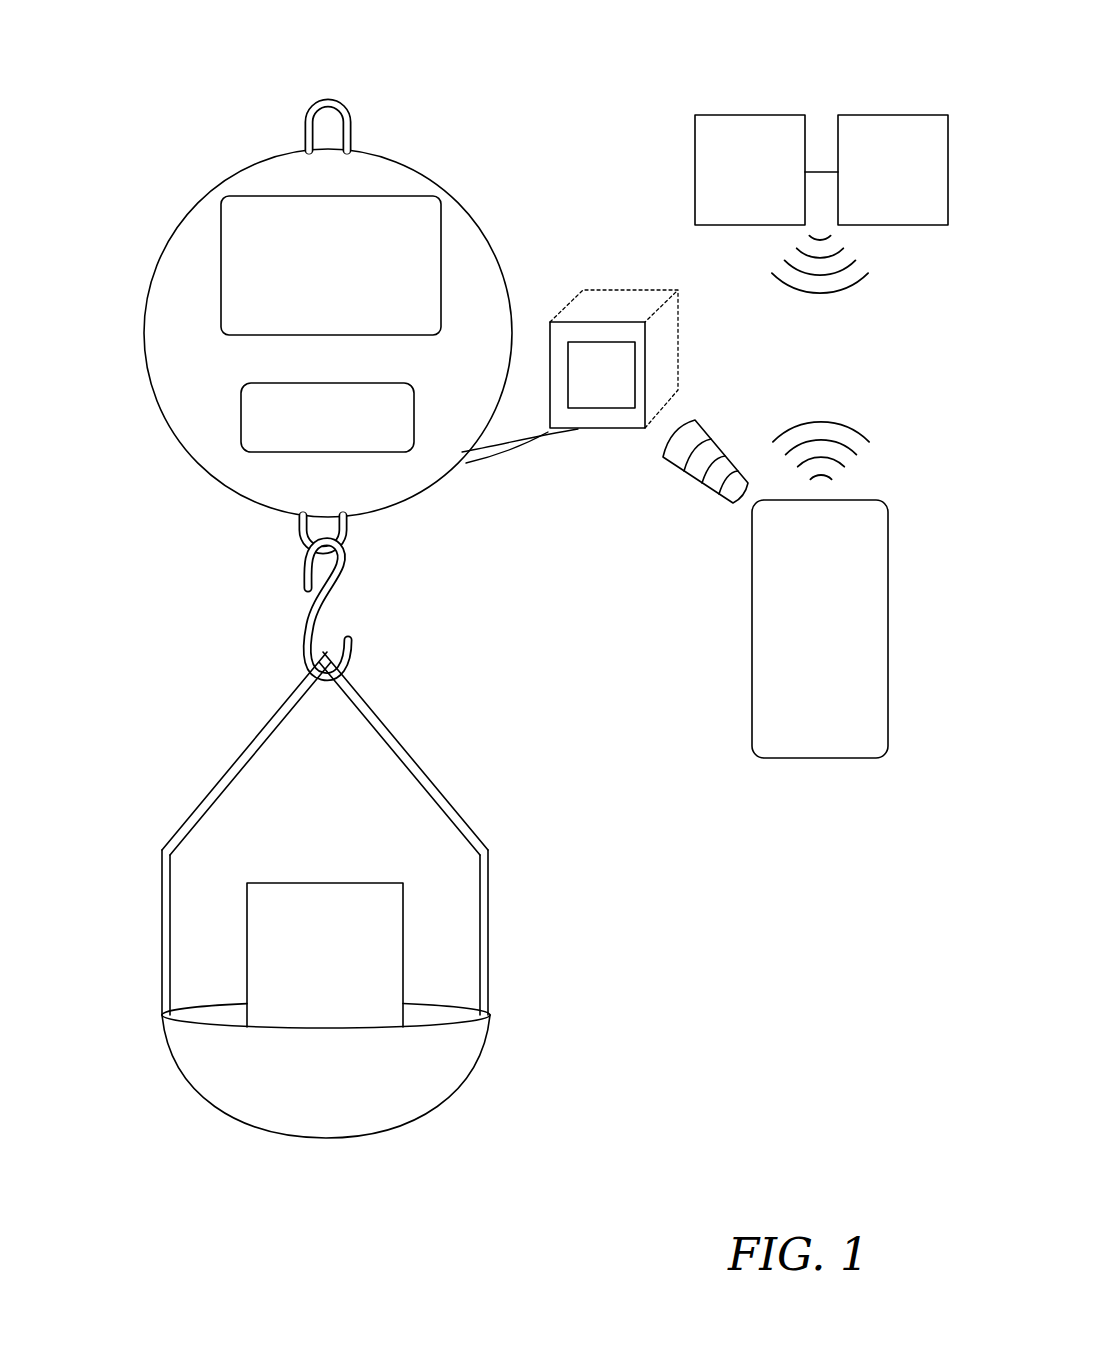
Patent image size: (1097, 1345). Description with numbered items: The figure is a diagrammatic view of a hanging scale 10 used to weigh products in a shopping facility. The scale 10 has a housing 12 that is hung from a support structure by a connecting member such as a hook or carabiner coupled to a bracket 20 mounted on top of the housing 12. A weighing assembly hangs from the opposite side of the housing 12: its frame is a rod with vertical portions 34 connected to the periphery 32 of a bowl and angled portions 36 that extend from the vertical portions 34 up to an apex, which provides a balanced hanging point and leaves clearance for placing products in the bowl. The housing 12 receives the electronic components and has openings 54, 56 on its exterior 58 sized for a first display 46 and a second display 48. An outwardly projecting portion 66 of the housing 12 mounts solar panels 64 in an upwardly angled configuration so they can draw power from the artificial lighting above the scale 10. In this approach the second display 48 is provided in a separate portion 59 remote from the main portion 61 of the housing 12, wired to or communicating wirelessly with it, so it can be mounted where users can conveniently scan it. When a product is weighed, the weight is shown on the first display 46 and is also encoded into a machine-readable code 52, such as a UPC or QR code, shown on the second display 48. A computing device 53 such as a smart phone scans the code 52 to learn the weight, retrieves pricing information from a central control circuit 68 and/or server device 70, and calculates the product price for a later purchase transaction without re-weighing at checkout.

The scale 10 is at (324, 315).
The housing 12 is at (465, 243).
The bracket 20 is at (352, 130).
The periphery 32 is at (212, 1073).
The vertical portions 34 is at (160, 983).
The angled portions 36 is at (200, 803).
The first display 46 is at (313, 1003).
The second display 48 is at (642, 380).
The machine-readable code 52 is at (602, 385).
The computing device 53 is at (888, 628).
The opening 54 is at (257, 453).
The opening 56 is at (590, 428).
The exterior 58 is at (177, 310).
The separate portion 59 is at (660, 313).
The main portion 61 is at (177, 420).
The solar panels 64 is at (410, 237).
The outwardly projecting portion 66 is at (222, 363).
The central control circuit 68 is at (750, 115).
The server device 70 is at (892, 115).